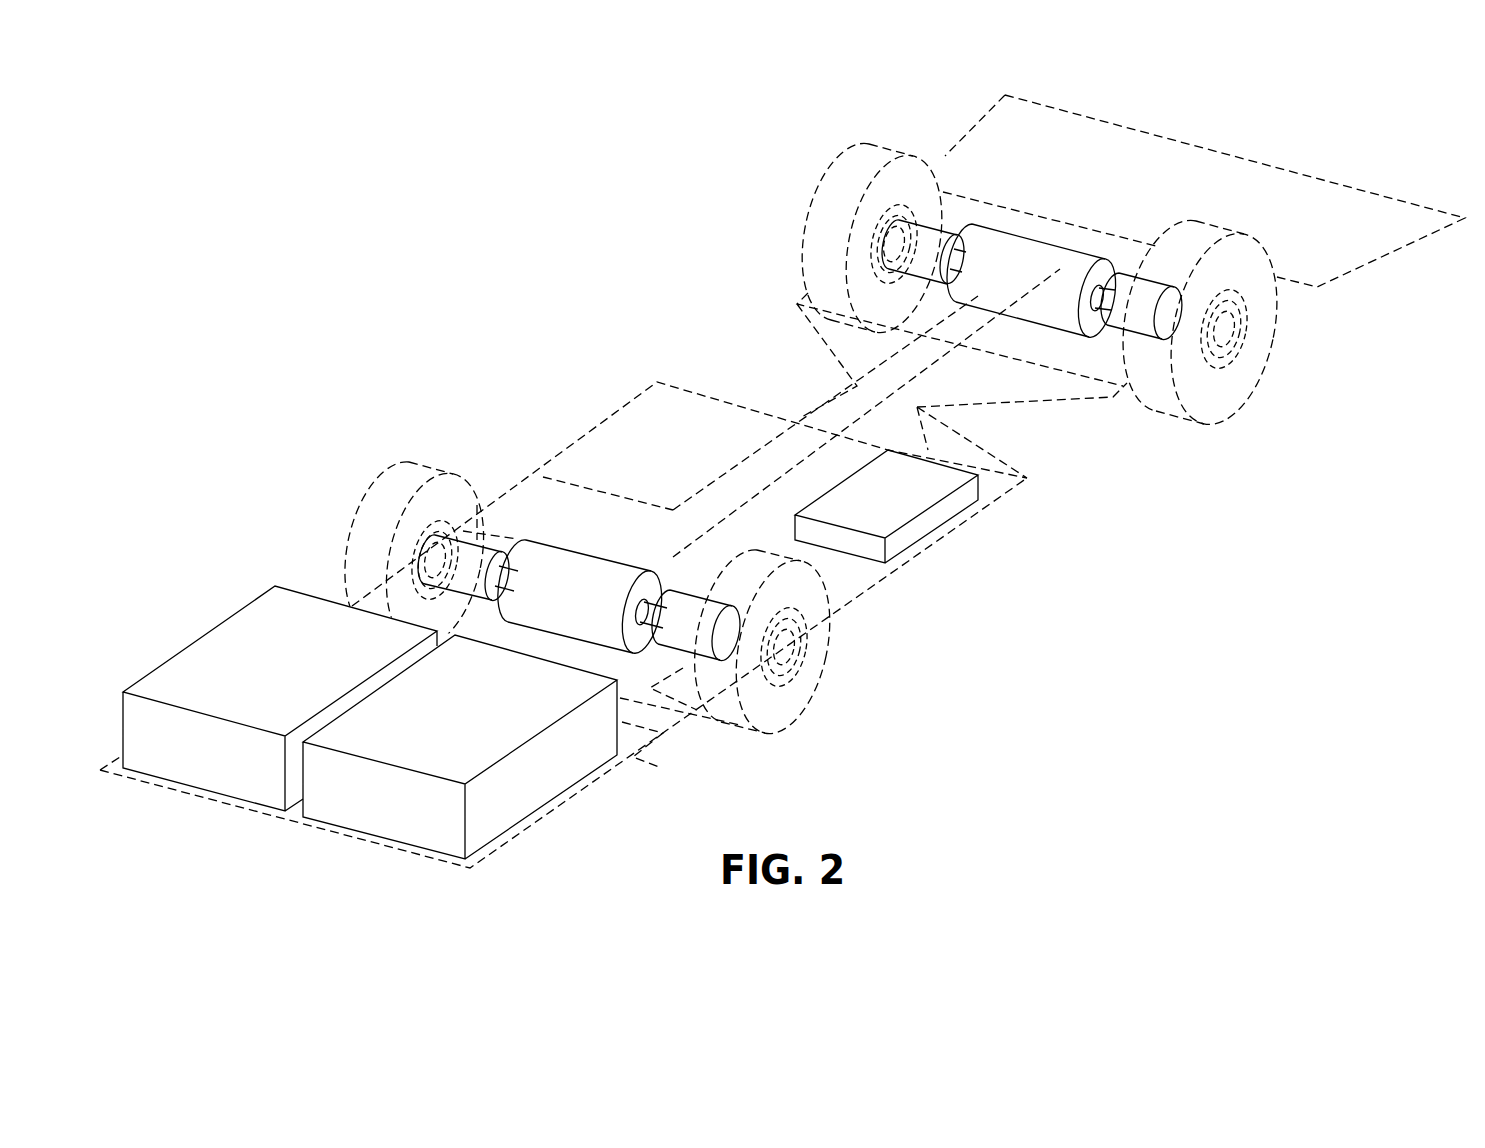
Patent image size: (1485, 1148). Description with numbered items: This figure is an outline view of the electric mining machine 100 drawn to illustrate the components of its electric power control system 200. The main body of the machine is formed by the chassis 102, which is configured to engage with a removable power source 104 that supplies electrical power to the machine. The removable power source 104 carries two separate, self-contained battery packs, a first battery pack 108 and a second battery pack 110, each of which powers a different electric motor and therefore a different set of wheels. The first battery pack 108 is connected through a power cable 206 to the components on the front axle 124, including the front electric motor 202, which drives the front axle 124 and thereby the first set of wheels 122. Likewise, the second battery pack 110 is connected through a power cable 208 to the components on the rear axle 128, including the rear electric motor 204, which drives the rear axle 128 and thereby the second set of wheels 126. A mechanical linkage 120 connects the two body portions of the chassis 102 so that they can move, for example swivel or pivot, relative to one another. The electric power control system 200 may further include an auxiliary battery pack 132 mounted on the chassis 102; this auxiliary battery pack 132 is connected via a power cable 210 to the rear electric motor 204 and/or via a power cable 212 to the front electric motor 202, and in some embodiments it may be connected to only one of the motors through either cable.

The electric mining machine 100 is at (565, 178).
The chassis 102 is at (577, 436).
The removable power source 104 is at (544, 834).
The first battery pack 108 is at (298, 671).
The second battery pack 110 is at (479, 721).
The mechanical linkage 120 is at (1036, 469).
The first set of wheels 122 is at (823, 178).
The front axle 124 is at (1244, 326).
The second set of wheels 126 is at (366, 483).
The rear axle 128 is at (802, 652).
The auxiliary battery pack 132 is at (912, 505).
The electric power control system 200 is at (1086, 571).
The front electric motor 202 is at (1043, 251).
The rear electric motor 204 is at (552, 560).
The power cable 206 is at (615, 496).
The power cable 208 is at (600, 683).
The power cable 210 is at (660, 555).
The power cable 212 is at (940, 367).